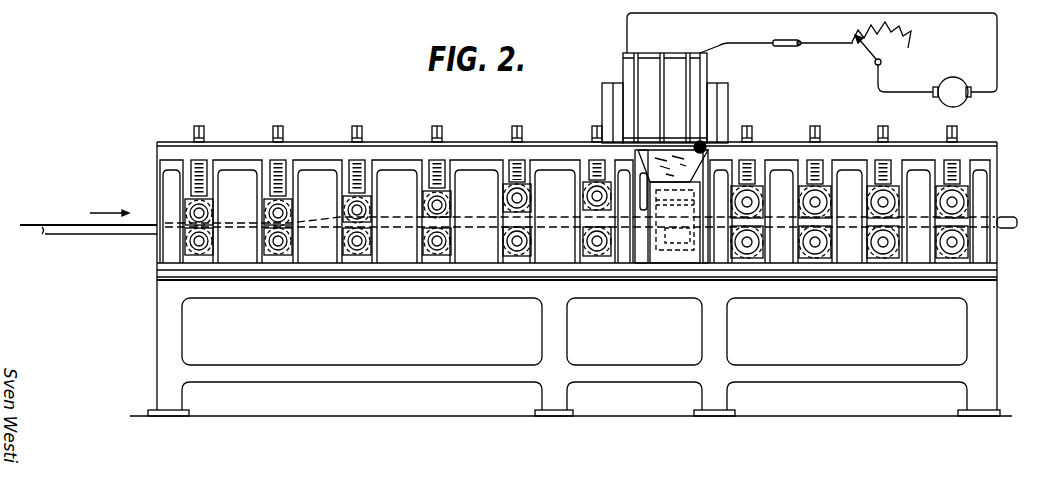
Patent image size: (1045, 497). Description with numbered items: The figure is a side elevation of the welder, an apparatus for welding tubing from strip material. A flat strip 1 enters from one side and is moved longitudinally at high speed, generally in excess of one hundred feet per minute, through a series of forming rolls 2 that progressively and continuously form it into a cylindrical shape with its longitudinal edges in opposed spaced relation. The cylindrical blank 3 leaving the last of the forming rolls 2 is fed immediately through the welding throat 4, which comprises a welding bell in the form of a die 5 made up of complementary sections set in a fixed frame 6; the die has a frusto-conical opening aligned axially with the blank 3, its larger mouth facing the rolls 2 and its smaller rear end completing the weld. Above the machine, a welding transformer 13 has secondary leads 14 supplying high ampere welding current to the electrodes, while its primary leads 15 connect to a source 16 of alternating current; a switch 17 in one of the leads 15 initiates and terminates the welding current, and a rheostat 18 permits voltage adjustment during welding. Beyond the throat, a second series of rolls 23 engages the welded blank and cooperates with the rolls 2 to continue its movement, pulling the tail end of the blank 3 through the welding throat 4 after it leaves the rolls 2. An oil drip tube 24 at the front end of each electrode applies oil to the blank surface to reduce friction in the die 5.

The flat strip 1 is at (46, 228).
The forming rolls 2 is at (268, 212).
The cylindrical blank 3 is at (641, 222).
The welding throat 4 is at (658, 265).
The die 5 is at (678, 265).
The fixed frame 6 is at (691, 254).
The welding transformer 13 is at (630, 72).
The secondary leads 14 is at (685, 180).
The primary leads 15 is at (745, 41).
The source of alternating current 16 is at (953, 77).
The switch 17 is at (788, 48).
The rheostat 18 is at (866, 53).
The second series of rolls 23 is at (877, 197).
The oil drip tube 24 is at (643, 188).